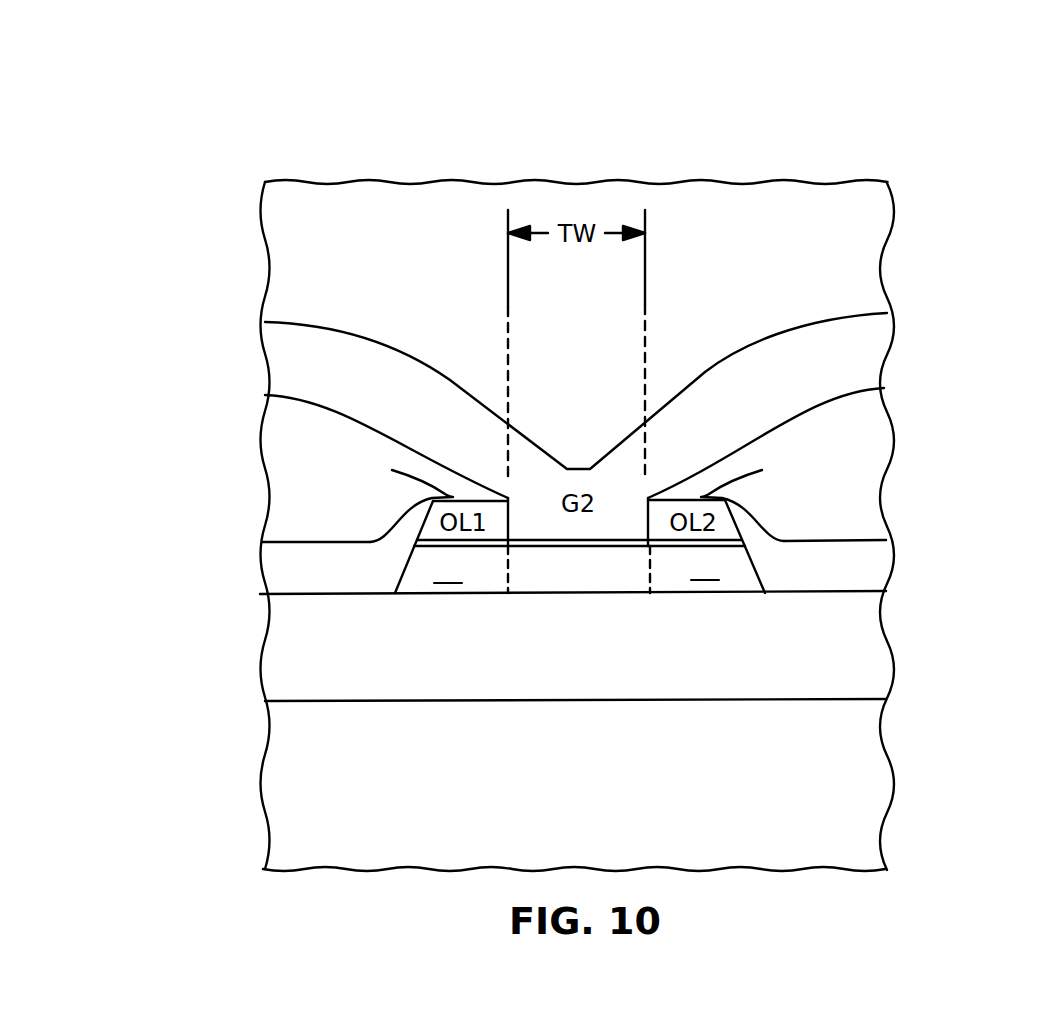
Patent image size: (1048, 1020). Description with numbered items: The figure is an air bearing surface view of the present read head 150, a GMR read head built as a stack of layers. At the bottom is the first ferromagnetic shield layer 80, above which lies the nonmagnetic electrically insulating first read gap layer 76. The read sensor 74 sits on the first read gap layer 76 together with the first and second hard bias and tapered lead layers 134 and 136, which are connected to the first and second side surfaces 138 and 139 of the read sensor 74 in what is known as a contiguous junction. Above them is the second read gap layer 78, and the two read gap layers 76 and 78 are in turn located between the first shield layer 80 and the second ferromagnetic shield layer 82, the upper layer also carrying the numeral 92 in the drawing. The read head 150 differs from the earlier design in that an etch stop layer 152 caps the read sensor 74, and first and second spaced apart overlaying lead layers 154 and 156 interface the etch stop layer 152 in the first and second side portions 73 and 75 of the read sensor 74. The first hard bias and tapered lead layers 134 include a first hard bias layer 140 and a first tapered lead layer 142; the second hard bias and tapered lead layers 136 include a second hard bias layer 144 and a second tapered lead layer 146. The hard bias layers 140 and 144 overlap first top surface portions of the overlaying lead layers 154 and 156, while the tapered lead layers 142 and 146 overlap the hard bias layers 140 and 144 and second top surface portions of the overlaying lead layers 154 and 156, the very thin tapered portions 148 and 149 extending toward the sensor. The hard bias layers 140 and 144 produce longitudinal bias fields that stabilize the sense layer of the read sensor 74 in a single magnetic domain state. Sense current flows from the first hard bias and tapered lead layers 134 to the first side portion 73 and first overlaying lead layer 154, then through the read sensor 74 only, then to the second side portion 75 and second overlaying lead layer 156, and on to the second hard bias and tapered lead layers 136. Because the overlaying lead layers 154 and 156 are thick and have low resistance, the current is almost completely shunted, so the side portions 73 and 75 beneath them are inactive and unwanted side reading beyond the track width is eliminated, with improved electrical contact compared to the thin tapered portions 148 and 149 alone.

The read head 150 is at (817, 138).
The second ferromagnetic shield layer 82 is at (639, 347).
The first pole piece layer (P1) 92 is at (835, 255).
The second read gap layer 78 is at (310, 363).
The first hard bias and tapered lead layers 134 is at (275, 495).
The first tapered lead layer 142 is at (282, 433).
The first hard bias layer 140 is at (275, 568).
The tapered portion 148 is at (468, 492).
The second hard bias and tapered lead layers 136 is at (866, 487).
The second tapered lead layer 146 is at (845, 435).
The second hard bias layer 144 is at (850, 572).
The tapered portion 149 is at (695, 490).
The etch stop layer 152 is at (530, 537).
The read sensor 74 is at (574, 572).
The first overlaying lead layer 154 is at (494, 530).
The second overlaying lead layer 156 is at (652, 593).
The first side portion of the read sensor 73 is at (387, 581).
The second side portion of the read sensor 75 is at (750, 583).
The first side surface 138 is at (407, 560).
The second side surface 139 is at (757, 565).
The first read gap layer 76 is at (272, 675).
The first ferromagnetic shield layer 80 is at (817, 773).